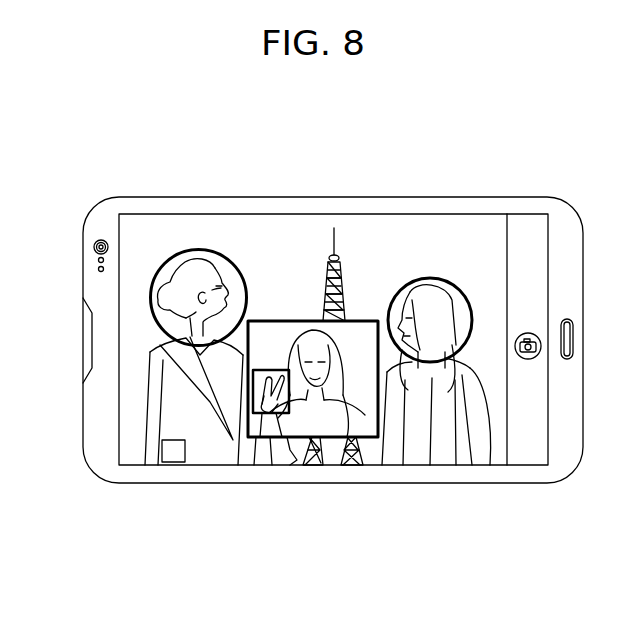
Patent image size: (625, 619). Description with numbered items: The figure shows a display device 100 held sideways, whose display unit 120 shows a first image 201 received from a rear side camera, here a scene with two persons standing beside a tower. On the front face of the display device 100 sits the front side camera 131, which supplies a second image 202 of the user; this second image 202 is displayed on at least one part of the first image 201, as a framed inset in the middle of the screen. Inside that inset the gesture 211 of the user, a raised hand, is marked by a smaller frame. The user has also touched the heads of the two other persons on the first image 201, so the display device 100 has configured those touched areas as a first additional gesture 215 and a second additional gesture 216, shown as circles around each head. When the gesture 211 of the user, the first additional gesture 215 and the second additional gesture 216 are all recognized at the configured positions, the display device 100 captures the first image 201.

The display device 100 is at (350, 197).
The display unit 120 is at (477, 232).
The front side camera 131 is at (95, 247).
The first image 201 is at (190, 232).
The second image 202 is at (338, 438).
The gesture of the user 211 is at (259, 438).
The first additional gesture 215 is at (213, 247).
The second additional gesture 216 is at (440, 278).